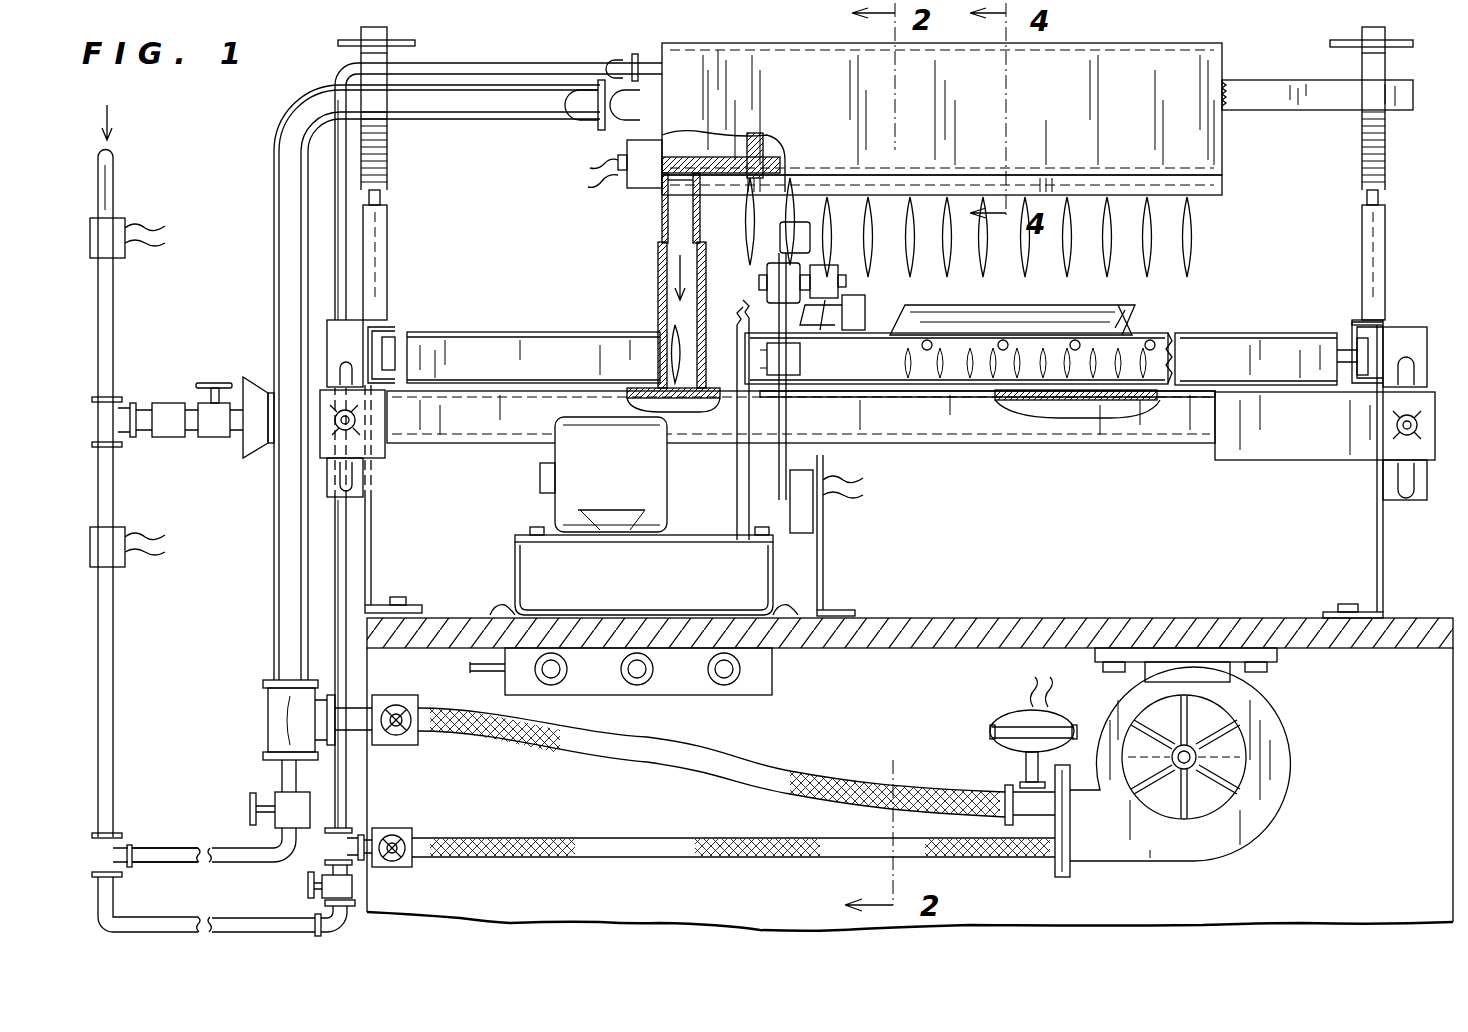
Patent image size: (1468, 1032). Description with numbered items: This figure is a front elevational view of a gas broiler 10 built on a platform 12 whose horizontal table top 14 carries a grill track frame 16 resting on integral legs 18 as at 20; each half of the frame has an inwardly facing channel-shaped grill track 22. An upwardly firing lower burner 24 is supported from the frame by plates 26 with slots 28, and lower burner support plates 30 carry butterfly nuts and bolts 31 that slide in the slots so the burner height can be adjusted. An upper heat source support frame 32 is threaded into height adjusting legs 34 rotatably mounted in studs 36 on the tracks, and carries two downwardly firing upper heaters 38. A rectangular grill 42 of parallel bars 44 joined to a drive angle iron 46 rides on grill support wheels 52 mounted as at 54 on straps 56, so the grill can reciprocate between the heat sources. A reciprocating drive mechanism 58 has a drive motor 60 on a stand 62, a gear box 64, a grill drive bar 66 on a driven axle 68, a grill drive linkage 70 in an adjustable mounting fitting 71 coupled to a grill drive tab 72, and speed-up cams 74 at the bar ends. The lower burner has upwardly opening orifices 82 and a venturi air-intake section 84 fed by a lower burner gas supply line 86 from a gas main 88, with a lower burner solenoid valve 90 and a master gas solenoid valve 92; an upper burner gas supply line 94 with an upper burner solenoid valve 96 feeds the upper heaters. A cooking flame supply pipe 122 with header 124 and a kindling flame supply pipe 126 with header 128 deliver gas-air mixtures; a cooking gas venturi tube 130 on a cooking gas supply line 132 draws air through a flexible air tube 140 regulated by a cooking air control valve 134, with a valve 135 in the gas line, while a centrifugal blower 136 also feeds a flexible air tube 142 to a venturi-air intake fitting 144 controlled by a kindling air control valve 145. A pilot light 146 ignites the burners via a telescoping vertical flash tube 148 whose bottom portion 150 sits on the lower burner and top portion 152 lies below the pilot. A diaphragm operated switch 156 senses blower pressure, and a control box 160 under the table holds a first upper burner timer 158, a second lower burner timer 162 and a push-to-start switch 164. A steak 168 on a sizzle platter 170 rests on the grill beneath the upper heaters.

The gas broiler 10 is at (257, 206).
The platform 12 is at (1335, 905).
The table top 14 is at (1140, 620).
The grill track frame 16 is at (1352, 322).
The legs 18 is at (368, 560).
The leg support point 20 is at (412, 600).
The grill track 22 is at (392, 326).
The lower burner 24 is at (490, 443).
The plates 26 is at (327, 332).
The slots 28 is at (327, 480).
The lower burner support plates 30 is at (375, 448).
The butterfly nuts and bolts 31 is at (335, 432).
The upper heat source support frame 32 is at (1330, 110).
The threaded height adjusting legs 34 is at (388, 168).
The upper heat source support frame studs 36 is at (388, 288).
The upper heaters 38 is at (805, 97).
The rectangular grill 42 is at (895, 345).
The bars 44 is at (1005, 345).
The drive angle iron 46 is at (1240, 335).
The grill support wheels 52 is at (445, 355).
The wheel mounting 54 is at (400, 340).
The straps 56 is at (1300, 333).
The reciprocating drive mechanism 58 is at (525, 502).
The reciprocating drive motor 60 is at (625, 477).
The stand 62 is at (520, 598).
The gear box and gear casing 64 is at (738, 312).
The grill drive bar 66 is at (850, 396).
The driven axle 68 is at (800, 364).
The grill drive linkage 70 is at (835, 300).
The grill drive linkage mounting fitting 71 is at (790, 278).
The grill drive tab 72 is at (828, 315).
The motor speed-up cams 74 is at (780, 232).
The vertical orifices 82 is at (688, 402).
The gas venturi, air-intake section 84 is at (265, 368).
The lower burner gas supply line 86 is at (210, 440).
The gas main 88 is at (113, 188).
The lower burner solenoid valve 90 is at (168, 440).
The master gas solenoid valve 92 is at (122, 256).
The upper burner gas supply line 94 is at (146, 915).
The upper burner solenoid valve 96 is at (122, 566).
The cooking flame supply pipe 122 is at (274, 122).
The header 124 is at (598, 105).
The kindling flame supply pipe 126 is at (500, 50).
The header 128 is at (630, 52).
The cooking gas venturi tube 130 is at (270, 727).
The cooking gas supply line 132 is at (180, 848).
The cooking air control valve 134 is at (420, 740).
The valve 135 is at (280, 795).
The centrifugal blower 136 is at (1278, 782).
The flexible air tube 140 is at (760, 760).
The flexible air tube 142 is at (705, 838).
The venturi-air intake fitting 144 is at (350, 835).
The kindling air control valve 145 is at (415, 832).
The pilot light 146 is at (650, 175).
The telescoping vertical flash tube 148 is at (662, 228).
The bottom portion 150 is at (665, 318).
The top portion 152 is at (680, 208).
The diaphragm operated switch 156 is at (1010, 712).
The first upper burner timer 158 is at (551, 685).
The control box 160 is at (772, 677).
The second lower burner timer 162 is at (640, 685).
The push to start switch 164 is at (725, 685).
The steak 168 is at (1110, 310).
The sizzle platter 170 is at (1135, 320).